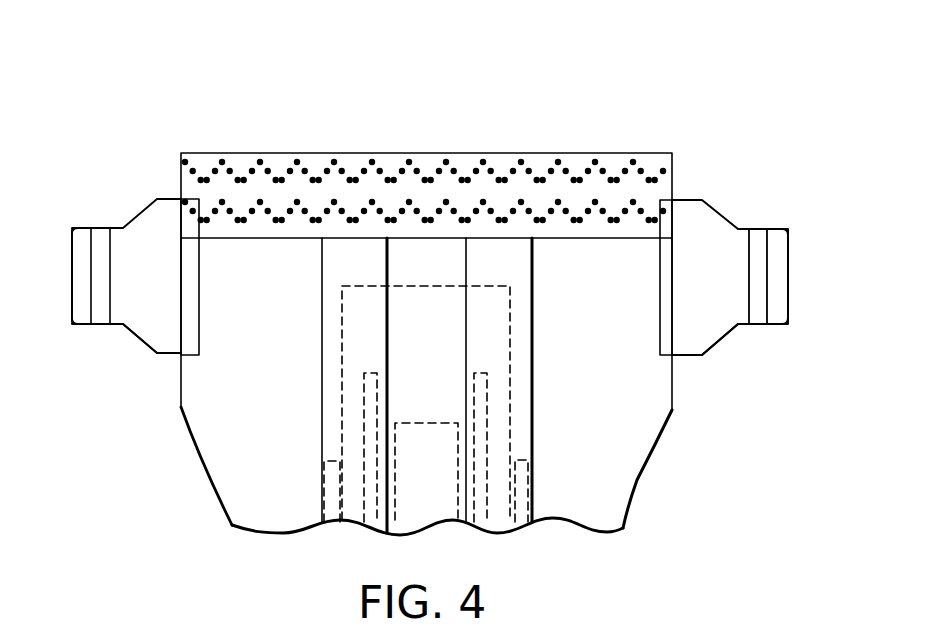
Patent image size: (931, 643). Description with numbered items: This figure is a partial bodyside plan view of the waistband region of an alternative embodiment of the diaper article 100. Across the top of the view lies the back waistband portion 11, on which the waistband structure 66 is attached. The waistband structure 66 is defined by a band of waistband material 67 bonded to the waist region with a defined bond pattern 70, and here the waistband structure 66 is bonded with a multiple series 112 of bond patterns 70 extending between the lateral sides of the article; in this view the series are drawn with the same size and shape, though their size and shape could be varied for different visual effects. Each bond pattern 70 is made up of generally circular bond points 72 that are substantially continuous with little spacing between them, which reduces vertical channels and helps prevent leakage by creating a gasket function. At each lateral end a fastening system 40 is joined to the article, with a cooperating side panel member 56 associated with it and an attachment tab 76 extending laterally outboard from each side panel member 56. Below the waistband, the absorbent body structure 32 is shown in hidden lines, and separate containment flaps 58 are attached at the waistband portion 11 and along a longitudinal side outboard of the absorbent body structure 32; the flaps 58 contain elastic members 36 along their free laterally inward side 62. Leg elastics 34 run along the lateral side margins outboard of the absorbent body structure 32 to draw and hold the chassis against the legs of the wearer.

The diaper article 100 is at (464, 64).
The back waistband portion 11 is at (302, 152).
The waistband structure 66 is at (373, 185).
The waistband material 67 is at (575, 163).
The bond pattern 70 is at (633, 202).
The bond points 72 is at (252, 208).
The multiple series of bond patterns 112 is at (210, 197).
The fastening system 40 is at (138, 212).
The attachment tab 76 is at (100, 277).
The side panel member 56 is at (142, 330).
The containment flaps 58 is at (333, 305).
The free laterally inward side 62 is at (387, 331).
The absorbent body structure 32 is at (495, 329).
The elastic members 36 is at (363, 405).
The leg elastics 34 is at (323, 497).